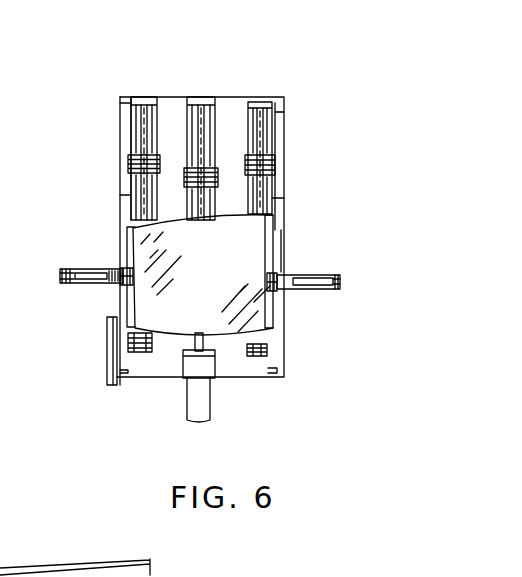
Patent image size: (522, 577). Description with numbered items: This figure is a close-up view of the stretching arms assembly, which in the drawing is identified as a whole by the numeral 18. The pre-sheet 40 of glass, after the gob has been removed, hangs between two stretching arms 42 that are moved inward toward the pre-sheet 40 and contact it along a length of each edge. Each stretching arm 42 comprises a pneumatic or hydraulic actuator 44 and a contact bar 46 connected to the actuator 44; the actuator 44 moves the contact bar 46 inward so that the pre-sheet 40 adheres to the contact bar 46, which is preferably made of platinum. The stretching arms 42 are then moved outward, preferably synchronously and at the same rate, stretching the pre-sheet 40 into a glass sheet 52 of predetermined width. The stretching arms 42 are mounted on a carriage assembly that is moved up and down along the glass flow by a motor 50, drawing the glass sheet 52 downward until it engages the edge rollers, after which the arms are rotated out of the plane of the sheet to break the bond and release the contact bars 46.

The positioning assembly 18 is at (303, 155).
The pre-sheet 40 is at (225, 340).
The stretching arms 42 is at (102, 257).
The actuator 44 is at (73, 287).
The contact bar 46 is at (123, 300).
The motor 50 is at (188, 402).
The glass sheet 52 is at (270, 216).